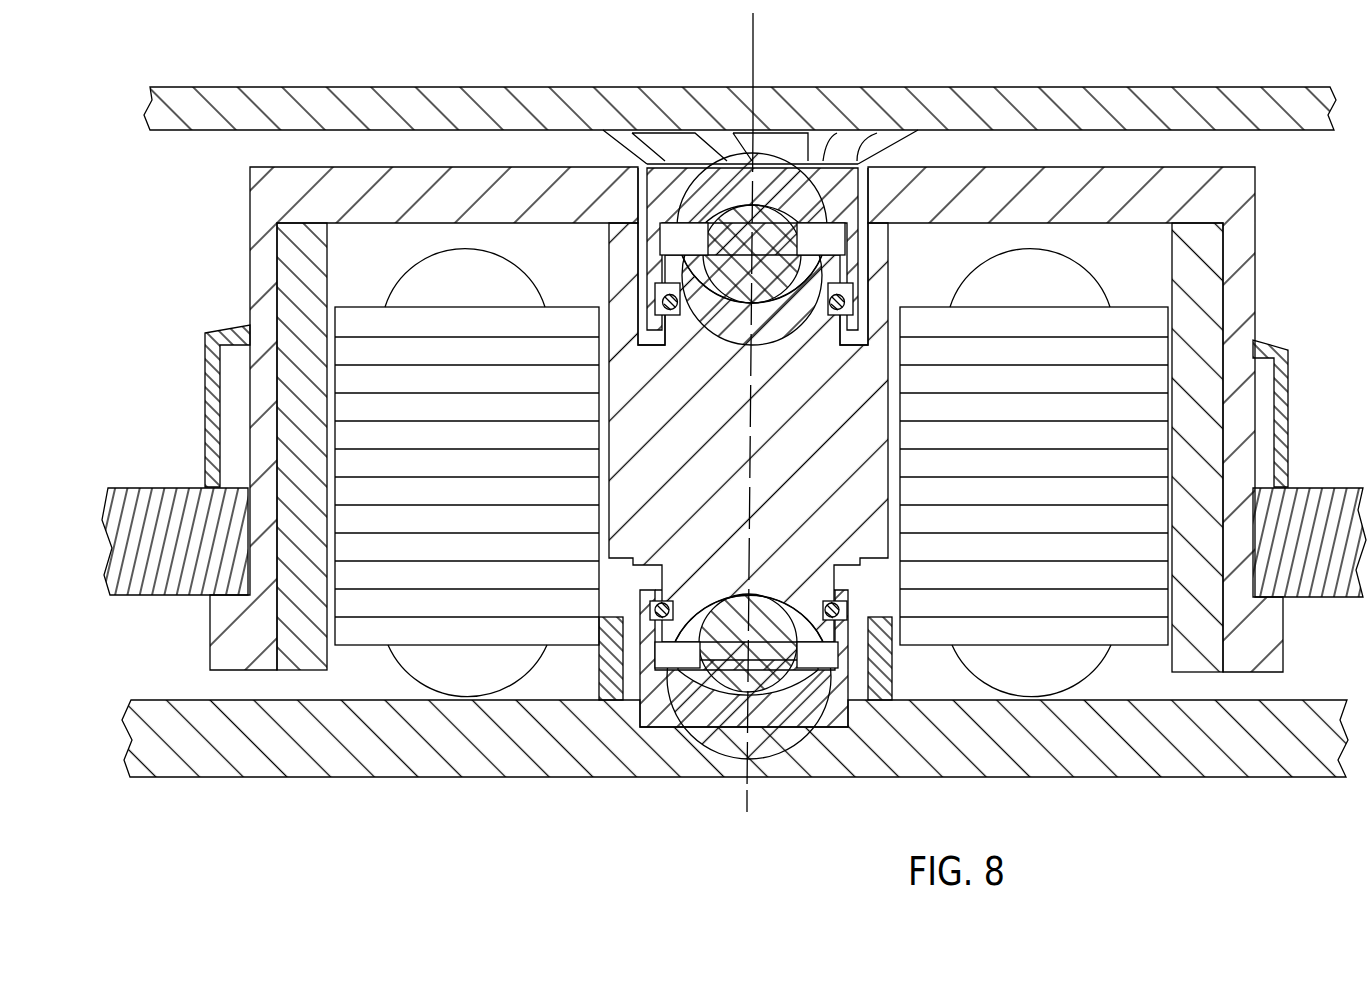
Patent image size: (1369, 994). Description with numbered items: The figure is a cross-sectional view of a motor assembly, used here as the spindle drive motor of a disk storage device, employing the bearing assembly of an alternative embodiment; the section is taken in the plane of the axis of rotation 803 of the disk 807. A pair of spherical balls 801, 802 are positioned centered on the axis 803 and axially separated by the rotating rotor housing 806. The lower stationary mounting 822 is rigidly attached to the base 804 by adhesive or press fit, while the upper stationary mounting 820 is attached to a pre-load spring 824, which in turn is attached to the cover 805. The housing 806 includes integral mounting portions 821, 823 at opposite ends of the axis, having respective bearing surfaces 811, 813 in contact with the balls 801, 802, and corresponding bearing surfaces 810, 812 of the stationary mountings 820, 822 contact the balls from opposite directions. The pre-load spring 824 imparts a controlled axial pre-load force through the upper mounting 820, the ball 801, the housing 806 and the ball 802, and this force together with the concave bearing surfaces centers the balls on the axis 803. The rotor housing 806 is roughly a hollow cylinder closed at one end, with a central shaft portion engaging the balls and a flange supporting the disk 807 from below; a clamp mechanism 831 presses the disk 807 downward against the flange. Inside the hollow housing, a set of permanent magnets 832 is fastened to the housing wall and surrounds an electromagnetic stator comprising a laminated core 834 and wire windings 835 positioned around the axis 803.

The spherical ball 801 is at (791, 246).
The spherical ball 802 is at (786, 639).
The axis of rotation 803 is at (753, 62).
The base 804 is at (1304, 744).
The cover 805 is at (1286, 124).
The rotor housing 806 is at (803, 461).
The disk 807 is at (151, 526).
The bearing surface 810 is at (703, 213).
The bearing surface 811 is at (693, 263).
The bearing surface 812 is at (797, 673).
The bearing surface 813 is at (688, 636).
The upper stationary mounting 820 is at (843, 199).
The mounting portion 821 is at (811, 336).
The lower stationary mounting 822 is at (831, 724).
The mounting portion 823 is at (803, 586).
The pre-load spring 824 is at (877, 137).
The clamp mechanism 831 is at (1288, 400).
The permanent magnets 832 is at (322, 264).
The core 834 is at (583, 336).
The wire windings 835 is at (481, 289).